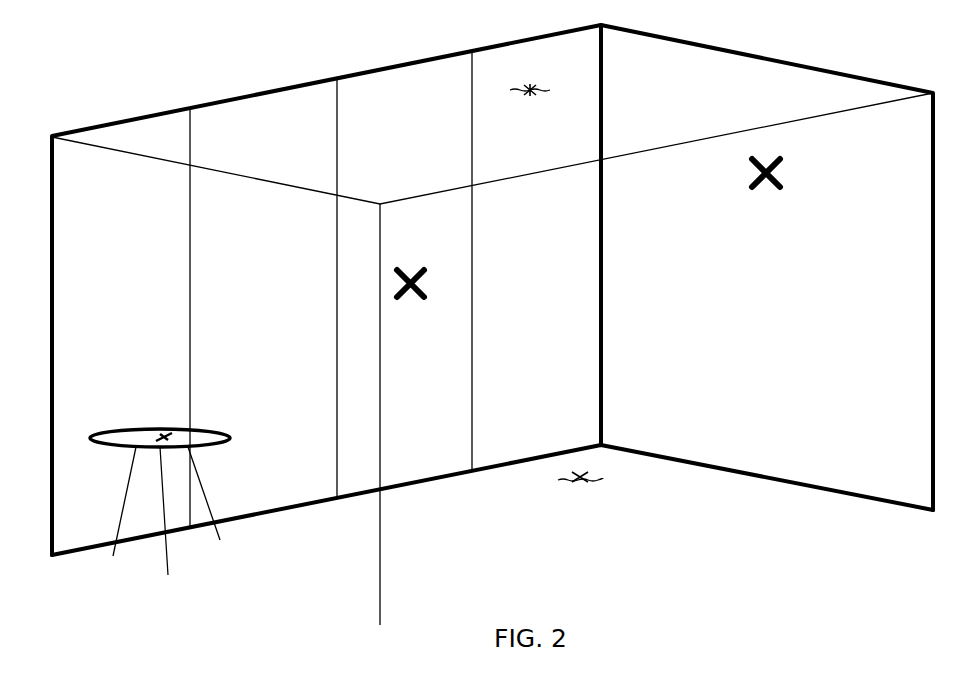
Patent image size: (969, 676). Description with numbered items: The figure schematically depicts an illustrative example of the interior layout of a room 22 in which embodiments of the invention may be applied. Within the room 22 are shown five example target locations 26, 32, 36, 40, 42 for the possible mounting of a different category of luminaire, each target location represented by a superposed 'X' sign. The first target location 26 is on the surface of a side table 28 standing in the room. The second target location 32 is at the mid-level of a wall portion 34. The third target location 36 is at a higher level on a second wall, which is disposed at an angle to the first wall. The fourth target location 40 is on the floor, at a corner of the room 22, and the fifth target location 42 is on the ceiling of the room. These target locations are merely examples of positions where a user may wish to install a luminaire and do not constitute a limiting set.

The room 22 is at (104, 84).
The first target location 26 is at (166, 432).
The side table 28 is at (222, 436).
The second target location 32 is at (423, 278).
The wall portion 34 is at (395, 92).
The third target location 36 is at (768, 190).
The fourth target location 40 is at (596, 476).
The fifth target location 42 is at (533, 88).